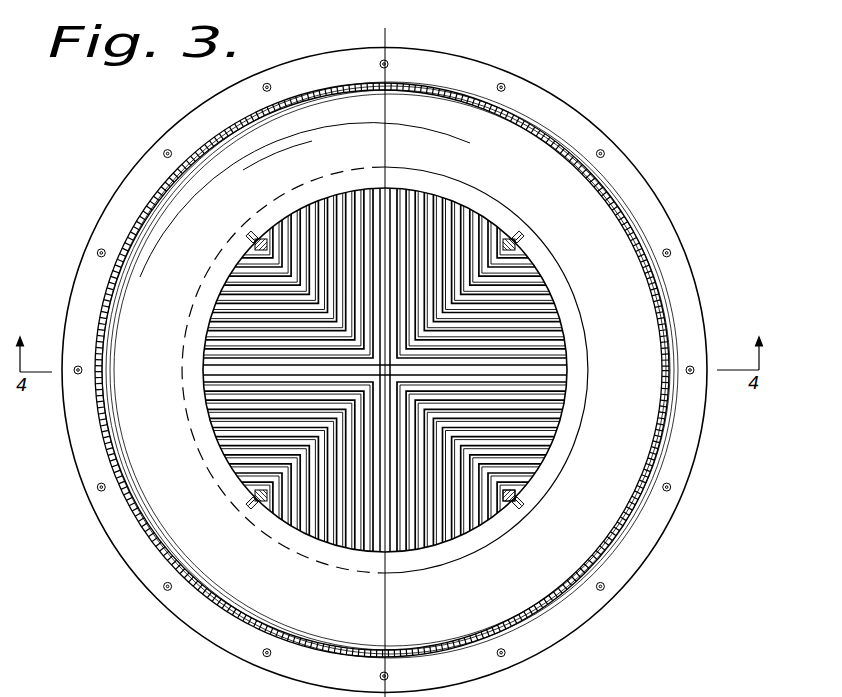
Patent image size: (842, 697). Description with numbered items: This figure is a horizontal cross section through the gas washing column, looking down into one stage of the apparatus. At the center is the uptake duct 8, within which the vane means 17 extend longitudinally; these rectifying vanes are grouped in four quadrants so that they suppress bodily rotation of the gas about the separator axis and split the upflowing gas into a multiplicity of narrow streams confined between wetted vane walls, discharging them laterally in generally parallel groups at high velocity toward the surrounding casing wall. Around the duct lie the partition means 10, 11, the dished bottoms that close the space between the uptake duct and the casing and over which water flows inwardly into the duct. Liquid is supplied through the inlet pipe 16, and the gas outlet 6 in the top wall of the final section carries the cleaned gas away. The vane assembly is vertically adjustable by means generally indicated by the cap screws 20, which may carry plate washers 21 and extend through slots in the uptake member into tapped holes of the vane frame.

The gas outlet 6 is at (200, 291).
The uptake duct 8 is at (562, 335).
The partition means 10 is at (137, 217).
The partition means 11 is at (137, 450).
The inlet pipe 16 is at (617, 205).
The vane means 17 is at (530, 287).
The cap screws 20 is at (522, 505).
The plate washers 21 is at (517, 495).